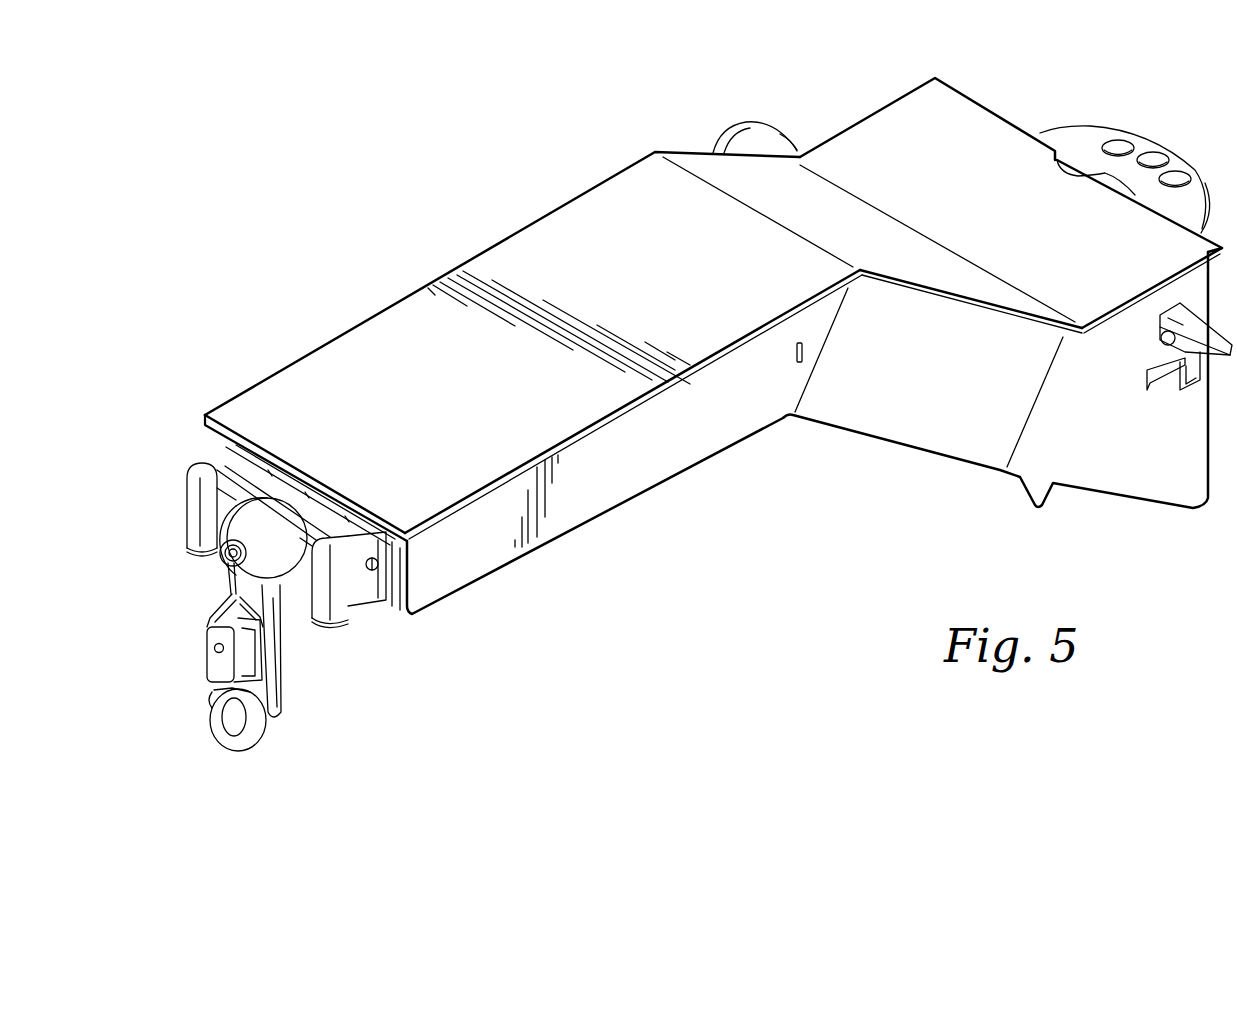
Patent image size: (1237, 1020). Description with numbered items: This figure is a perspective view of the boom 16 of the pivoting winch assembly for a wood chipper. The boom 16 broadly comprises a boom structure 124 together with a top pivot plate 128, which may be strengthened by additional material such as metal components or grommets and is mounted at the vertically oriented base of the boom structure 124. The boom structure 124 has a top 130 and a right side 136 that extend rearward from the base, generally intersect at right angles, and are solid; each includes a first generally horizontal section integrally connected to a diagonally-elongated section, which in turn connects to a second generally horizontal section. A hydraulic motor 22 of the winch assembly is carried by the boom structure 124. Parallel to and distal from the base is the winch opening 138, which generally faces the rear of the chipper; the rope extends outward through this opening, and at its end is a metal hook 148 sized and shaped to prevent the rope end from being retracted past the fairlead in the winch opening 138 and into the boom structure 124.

The boom 16 is at (862, 711).
The hydraulic motor 22 is at (770, 142).
The boom structure 124 is at (771, 546).
The top pivot plate 128 is at (1090, 143).
The top 130 is at (640, 246).
The right side 136 is at (929, 377).
The winch opening 138 is at (363, 644).
The hook 148 is at (228, 750).